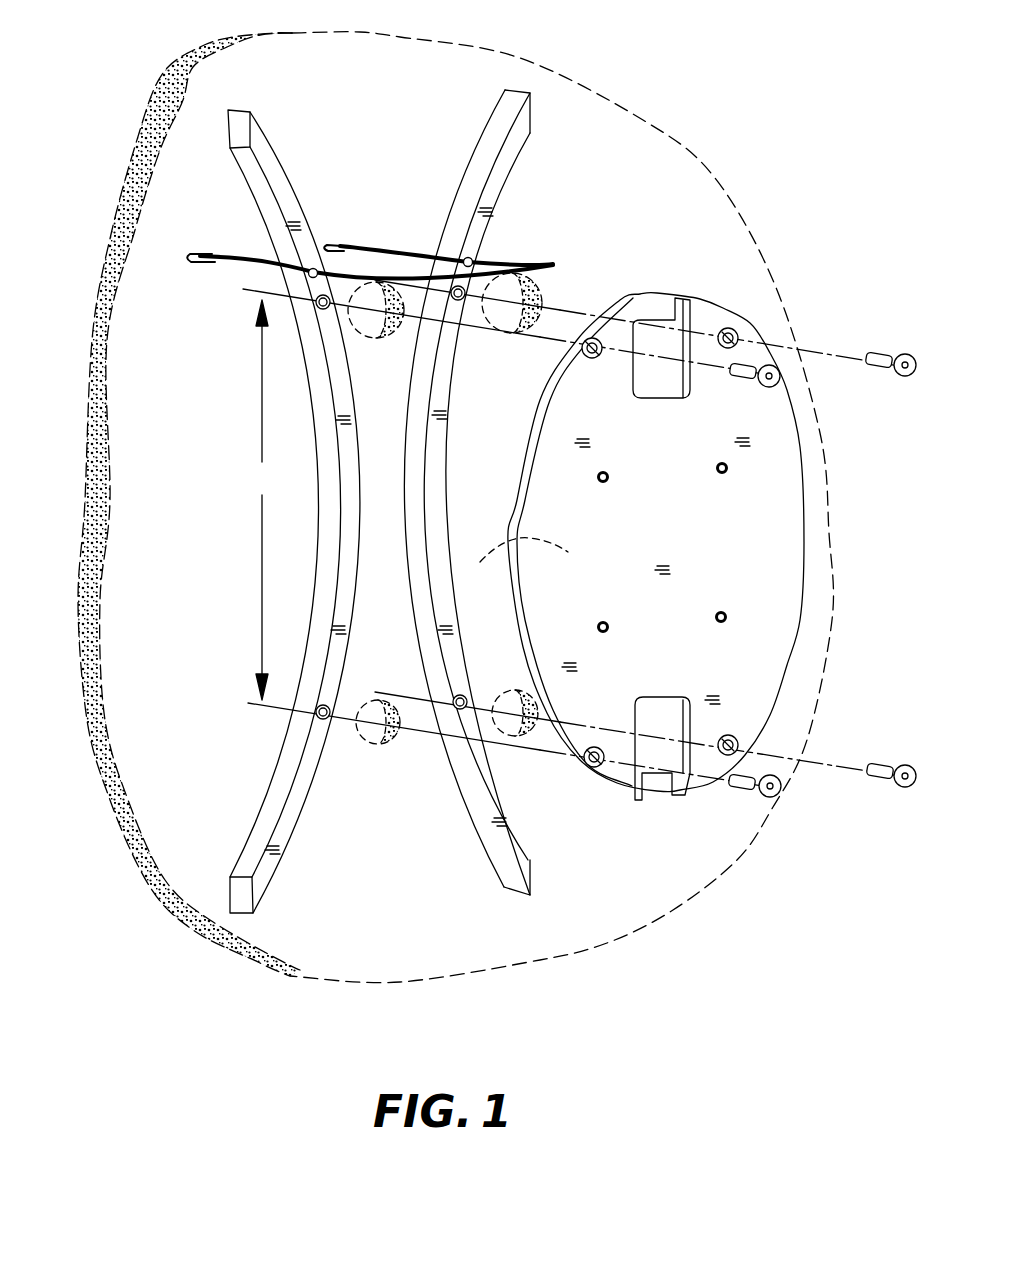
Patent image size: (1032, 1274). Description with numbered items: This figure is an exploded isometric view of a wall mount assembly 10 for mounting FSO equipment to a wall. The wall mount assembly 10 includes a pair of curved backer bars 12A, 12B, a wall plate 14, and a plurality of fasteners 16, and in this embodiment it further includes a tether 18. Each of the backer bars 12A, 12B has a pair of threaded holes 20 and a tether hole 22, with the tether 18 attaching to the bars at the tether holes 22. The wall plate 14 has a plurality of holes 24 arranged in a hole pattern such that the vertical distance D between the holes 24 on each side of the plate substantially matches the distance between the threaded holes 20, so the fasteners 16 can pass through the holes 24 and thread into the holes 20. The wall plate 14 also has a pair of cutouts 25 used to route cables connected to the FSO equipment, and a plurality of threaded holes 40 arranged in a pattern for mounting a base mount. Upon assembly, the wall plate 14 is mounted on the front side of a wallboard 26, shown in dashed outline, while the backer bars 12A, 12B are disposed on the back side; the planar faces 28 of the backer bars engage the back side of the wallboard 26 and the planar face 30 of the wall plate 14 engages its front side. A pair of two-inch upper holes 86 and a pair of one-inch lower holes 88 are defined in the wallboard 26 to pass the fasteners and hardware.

The wall mount assembly 10 is at (633, 83).
The backer bar 12A is at (270, 162).
The backer bar 12B is at (508, 160).
The wall plate 14 is at (793, 540).
The fasteners 16 is at (885, 355).
The tether 18 is at (390, 250).
The threaded holes 20 is at (312, 300).
The tether hole 22 is at (313, 268).
The holes 24 is at (590, 360).
The cutouts 25 is at (655, 330).
The wallboard 26 is at (777, 272).
The planar faces 28 is at (283, 840).
The planar face 30 is at (510, 558).
The threaded holes 40 is at (607, 483).
The upper holes 86 is at (373, 340).
The lower holes 88 is at (392, 740).
The vertical distance D is at (262, 500).